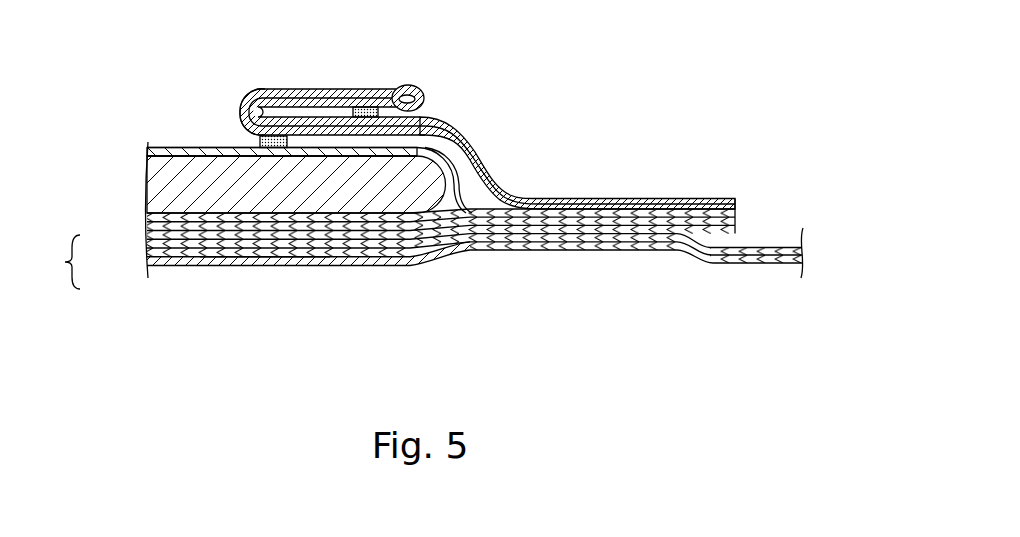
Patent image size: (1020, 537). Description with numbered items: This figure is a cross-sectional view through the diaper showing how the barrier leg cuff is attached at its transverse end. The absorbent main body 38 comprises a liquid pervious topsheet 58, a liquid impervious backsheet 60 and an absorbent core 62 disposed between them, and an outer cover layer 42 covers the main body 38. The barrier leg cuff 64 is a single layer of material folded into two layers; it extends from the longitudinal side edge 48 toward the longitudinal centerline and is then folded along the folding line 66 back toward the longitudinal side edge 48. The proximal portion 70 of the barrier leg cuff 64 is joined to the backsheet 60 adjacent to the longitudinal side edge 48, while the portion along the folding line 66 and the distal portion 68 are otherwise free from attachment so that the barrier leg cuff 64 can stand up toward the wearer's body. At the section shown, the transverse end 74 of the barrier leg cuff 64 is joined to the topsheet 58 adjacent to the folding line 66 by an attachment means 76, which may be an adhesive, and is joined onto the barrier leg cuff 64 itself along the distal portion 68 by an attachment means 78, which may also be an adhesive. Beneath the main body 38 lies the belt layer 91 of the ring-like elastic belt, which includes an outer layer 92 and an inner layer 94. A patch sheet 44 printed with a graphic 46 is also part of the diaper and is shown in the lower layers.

The absorbent main body 38 is at (553, 146).
The outer cover layer 42 is at (738, 228).
The patch sheet 44 is at (425, 255).
The graphic 46 is at (267, 257).
The longitudinal side edge 48 is at (738, 201).
The liquid pervious topsheet 58 is at (188, 146).
The liquid impervious backsheet 60 is at (153, 220).
The absorbent core 62 is at (157, 188).
The barrier leg cuff 64 is at (343, 90).
The folding line 66 is at (240, 112).
The distal portion 68 is at (424, 100).
The proximal portion 70 is at (632, 199).
The transverse end 74 is at (285, 90).
The attachment means 76 is at (262, 139).
The attachment means 78 is at (380, 114).
The belt layer 91 is at (56, 262).
The outer layer 92 is at (150, 262).
The inner layer 94 is at (149, 235).